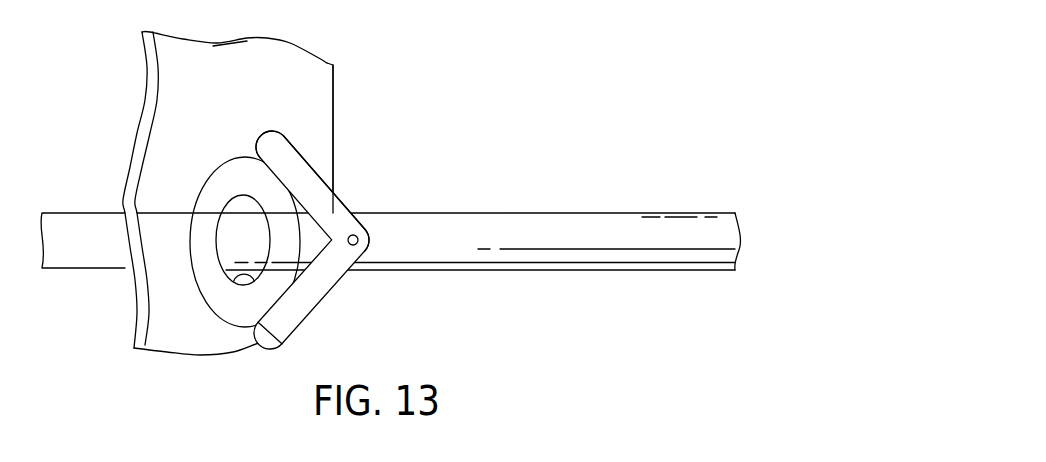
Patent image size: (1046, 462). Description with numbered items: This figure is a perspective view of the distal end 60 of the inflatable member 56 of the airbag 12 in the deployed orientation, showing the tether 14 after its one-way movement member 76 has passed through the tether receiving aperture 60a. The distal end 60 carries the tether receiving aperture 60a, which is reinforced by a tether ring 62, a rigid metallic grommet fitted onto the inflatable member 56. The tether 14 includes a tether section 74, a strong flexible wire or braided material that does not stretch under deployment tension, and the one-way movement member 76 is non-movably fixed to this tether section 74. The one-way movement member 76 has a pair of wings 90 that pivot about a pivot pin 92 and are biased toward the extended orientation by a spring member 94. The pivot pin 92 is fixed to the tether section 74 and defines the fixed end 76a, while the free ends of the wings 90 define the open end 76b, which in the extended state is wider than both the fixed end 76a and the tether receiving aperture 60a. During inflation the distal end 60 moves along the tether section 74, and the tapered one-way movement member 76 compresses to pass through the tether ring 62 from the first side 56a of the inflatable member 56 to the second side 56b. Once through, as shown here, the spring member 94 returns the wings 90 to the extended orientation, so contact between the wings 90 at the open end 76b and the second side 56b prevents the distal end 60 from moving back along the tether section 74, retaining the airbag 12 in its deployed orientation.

The airbag 12 is at (290, 84).
The tether 14 is at (67, 204).
The inflatable member 56 is at (297, 127).
The first side 56a is at (147, 72).
The second side 56b is at (193, 78).
The distal end 60 is at (240, 338).
The tether receiving aperture 60a is at (237, 281).
The tether ring 62 is at (233, 182).
The tether section 74 is at (97, 243).
The one-way movement member 76 is at (352, 290).
The fixed end 76a is at (370, 236).
The open end 76b is at (260, 138).
The wings 90 is at (295, 173).
The pivot pin 92 is at (358, 243).
The spring member 94 is at (270, 235).